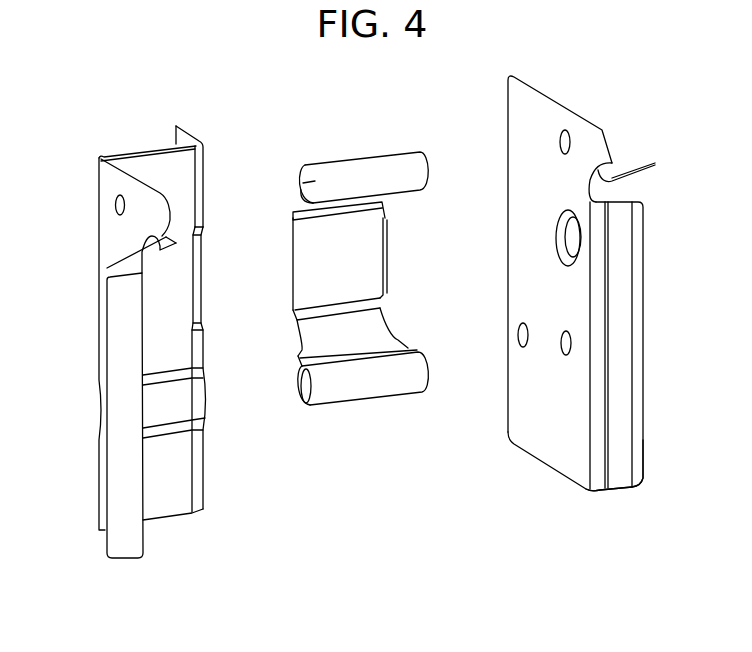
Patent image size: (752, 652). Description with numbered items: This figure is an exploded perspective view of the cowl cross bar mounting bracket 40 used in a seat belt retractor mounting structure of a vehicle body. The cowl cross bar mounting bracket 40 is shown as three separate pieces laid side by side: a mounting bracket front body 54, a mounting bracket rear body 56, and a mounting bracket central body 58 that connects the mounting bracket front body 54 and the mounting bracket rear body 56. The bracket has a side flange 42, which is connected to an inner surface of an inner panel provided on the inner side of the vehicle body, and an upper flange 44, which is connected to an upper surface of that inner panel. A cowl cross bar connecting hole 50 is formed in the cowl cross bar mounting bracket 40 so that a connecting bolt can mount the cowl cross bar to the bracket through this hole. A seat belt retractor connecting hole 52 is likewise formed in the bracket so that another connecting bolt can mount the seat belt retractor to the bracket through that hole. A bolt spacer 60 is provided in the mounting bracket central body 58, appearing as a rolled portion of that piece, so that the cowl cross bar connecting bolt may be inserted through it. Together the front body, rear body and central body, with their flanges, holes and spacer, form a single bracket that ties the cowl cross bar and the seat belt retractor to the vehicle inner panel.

The cowl cross bar mounting bracket 40 is at (455, 560).
The side flange 42 is at (637, 338).
The upper flange 44 is at (125, 252).
The cowl cross bar connecting hole 50 is at (114, 206).
The seat belt retractor connecting hole 52 is at (565, 130).
The mounting bracket front body 54 is at (625, 508).
The mounting bracket rear body 56 is at (178, 542).
The mounting bracket central body 58 is at (367, 414).
The bolt spacer 60 is at (360, 157).